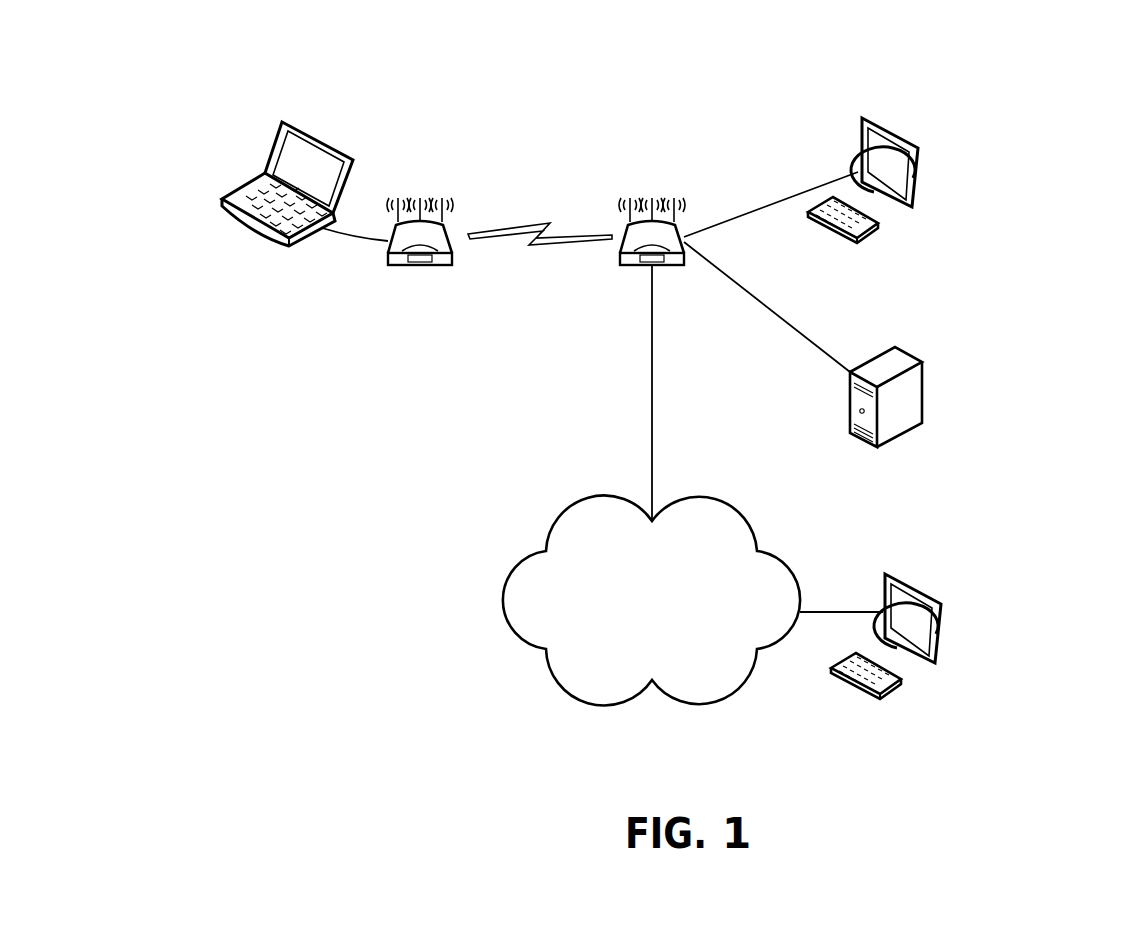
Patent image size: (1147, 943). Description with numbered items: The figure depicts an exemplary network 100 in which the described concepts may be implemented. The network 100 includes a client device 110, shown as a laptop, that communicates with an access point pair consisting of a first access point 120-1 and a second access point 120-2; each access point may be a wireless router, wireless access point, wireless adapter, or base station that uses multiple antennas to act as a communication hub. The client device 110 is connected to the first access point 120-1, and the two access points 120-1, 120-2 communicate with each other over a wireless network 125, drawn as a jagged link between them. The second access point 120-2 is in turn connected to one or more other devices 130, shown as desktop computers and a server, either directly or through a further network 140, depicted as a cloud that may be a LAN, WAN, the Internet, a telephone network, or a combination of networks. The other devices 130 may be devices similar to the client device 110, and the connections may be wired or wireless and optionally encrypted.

The network 100 is at (1040, 76).
The client device 110 is at (254, 156).
The access point 120-1 is at (388, 276).
The access point 120-2 is at (620, 276).
The wireless network 125 is at (510, 228).
The other device 130 is at (856, 106).
The network 140 is at (633, 623).